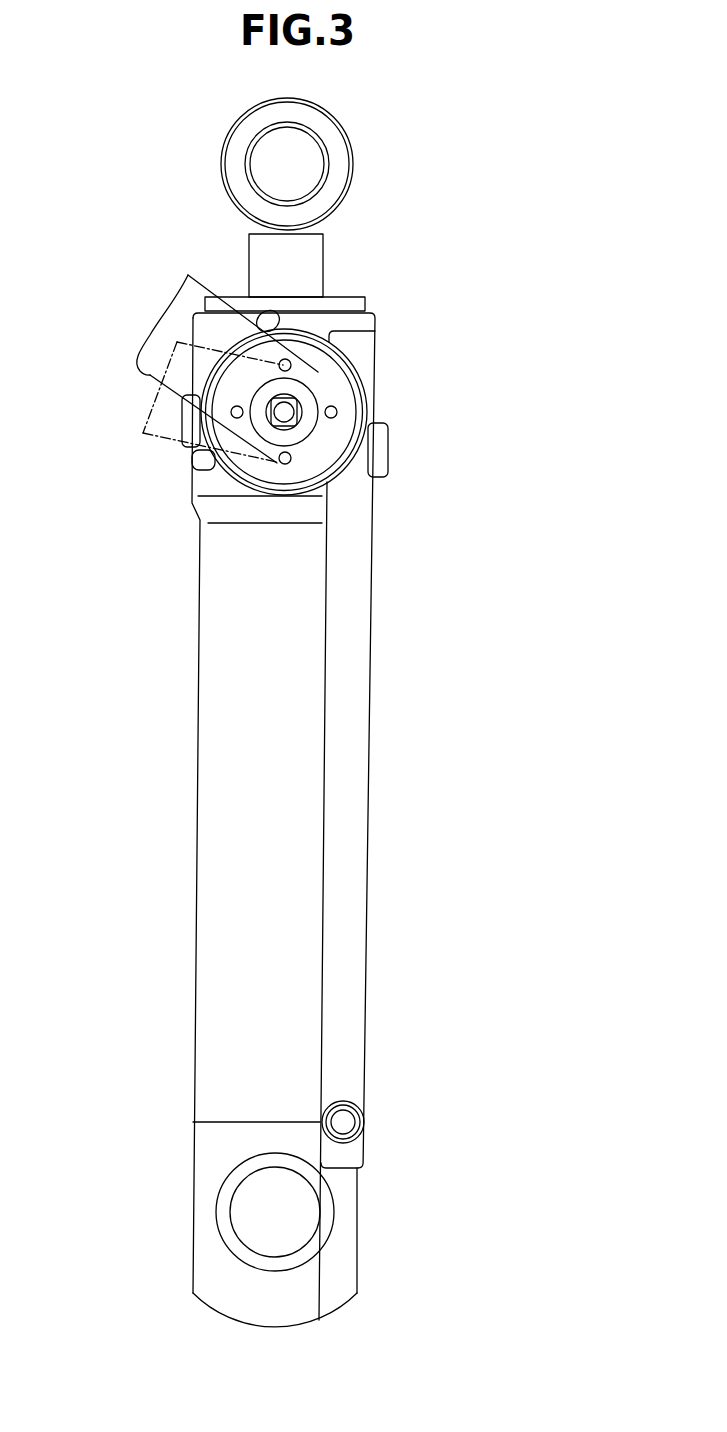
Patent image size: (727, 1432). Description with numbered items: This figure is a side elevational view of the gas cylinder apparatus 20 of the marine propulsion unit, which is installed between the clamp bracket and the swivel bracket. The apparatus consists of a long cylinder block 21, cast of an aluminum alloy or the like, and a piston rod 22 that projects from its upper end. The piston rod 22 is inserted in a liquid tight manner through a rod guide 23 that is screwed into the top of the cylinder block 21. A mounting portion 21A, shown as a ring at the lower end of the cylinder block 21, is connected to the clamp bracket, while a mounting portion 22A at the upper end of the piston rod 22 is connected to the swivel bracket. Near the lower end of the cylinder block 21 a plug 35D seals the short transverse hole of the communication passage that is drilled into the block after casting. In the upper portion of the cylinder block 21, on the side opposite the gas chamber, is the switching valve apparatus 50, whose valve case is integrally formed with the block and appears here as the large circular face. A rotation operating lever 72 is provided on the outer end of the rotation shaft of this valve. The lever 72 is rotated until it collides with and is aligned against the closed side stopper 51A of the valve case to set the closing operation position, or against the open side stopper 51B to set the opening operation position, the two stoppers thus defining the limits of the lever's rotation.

The gas cylinder apparatus 20 is at (473, 343).
The cylinder block 21 is at (212, 757).
The mounting portion 21A is at (237, 1247).
The piston rod 22 is at (310, 243).
The mounting portion 22A is at (332, 135).
The rod guide 23 is at (367, 303).
The plug 35D is at (348, 1127).
The switching valve apparatus 50 is at (340, 378).
The closed side stopper 51A is at (274, 316).
The open side stopper 51B is at (192, 457).
The rotation operating lever 72 is at (150, 375).